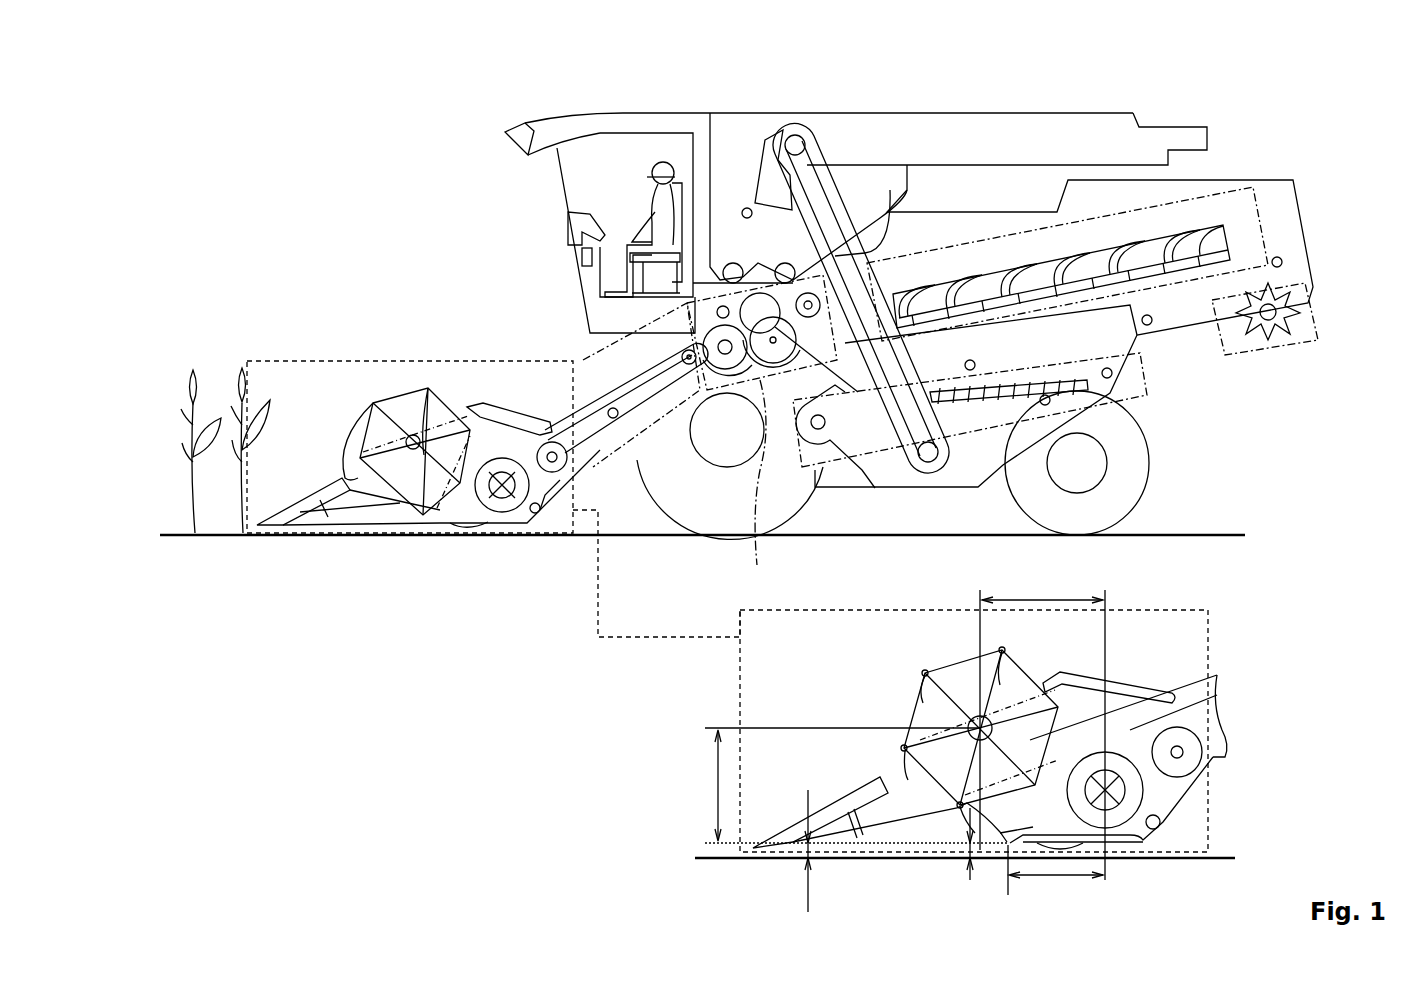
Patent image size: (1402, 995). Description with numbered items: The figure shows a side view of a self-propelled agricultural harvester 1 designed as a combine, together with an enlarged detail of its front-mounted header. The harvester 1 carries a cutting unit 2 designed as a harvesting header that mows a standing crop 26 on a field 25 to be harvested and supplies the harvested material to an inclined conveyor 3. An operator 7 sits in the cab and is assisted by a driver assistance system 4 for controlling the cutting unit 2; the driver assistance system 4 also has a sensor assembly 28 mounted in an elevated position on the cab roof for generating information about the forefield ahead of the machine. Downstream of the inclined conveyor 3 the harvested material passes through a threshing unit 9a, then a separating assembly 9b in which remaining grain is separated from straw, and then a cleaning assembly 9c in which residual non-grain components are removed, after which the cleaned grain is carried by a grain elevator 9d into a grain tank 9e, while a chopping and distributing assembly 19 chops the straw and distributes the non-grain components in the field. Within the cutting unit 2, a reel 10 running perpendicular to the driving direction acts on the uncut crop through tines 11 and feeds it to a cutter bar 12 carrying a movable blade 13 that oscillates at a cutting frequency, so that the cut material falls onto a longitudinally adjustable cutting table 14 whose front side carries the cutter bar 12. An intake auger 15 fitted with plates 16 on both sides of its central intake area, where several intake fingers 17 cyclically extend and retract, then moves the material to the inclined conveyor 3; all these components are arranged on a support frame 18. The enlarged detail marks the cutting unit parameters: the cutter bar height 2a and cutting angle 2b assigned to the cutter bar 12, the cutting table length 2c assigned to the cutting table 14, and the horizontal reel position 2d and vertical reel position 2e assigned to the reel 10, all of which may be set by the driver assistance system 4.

The agricultural harvester 1 is at (1340, 155).
The cutting unit 2 is at (265, 355).
The cutter bar height 2a is at (805, 895).
The cutting angle 2b is at (980, 920).
The cutting table length 2c is at (1055, 878).
The horizontal reel position 2d is at (1042, 598).
The vertical reel position 2e is at (714, 785).
The inclined conveyor 3 is at (617, 467).
The driver assistance system 4 is at (580, 254).
The operator 7 is at (655, 162).
The threshing unit 9a is at (720, 437).
The separating assembly 9b is at (1232, 195).
The cleaning assembly 9c is at (1148, 390).
The grain elevator 9d is at (873, 173).
The grain tank 9e is at (724, 135).
The reel 10 is at (390, 395).
The tines 11 is at (350, 478).
The cutter bar 12 is at (410, 515).
The blade 13 is at (447, 530).
The cutting table 14 is at (492, 535).
The intake auger 15 is at (542, 428).
The plates 16 is at (520, 450).
The intake fingers 17 is at (493, 467).
The support frame 18 is at (547, 490).
The chopping and distributing assembly 19 is at (1270, 360).
The field 25 is at (172, 503).
The standing crop 26 is at (178, 387).
The sensor assembly 28 is at (498, 130).